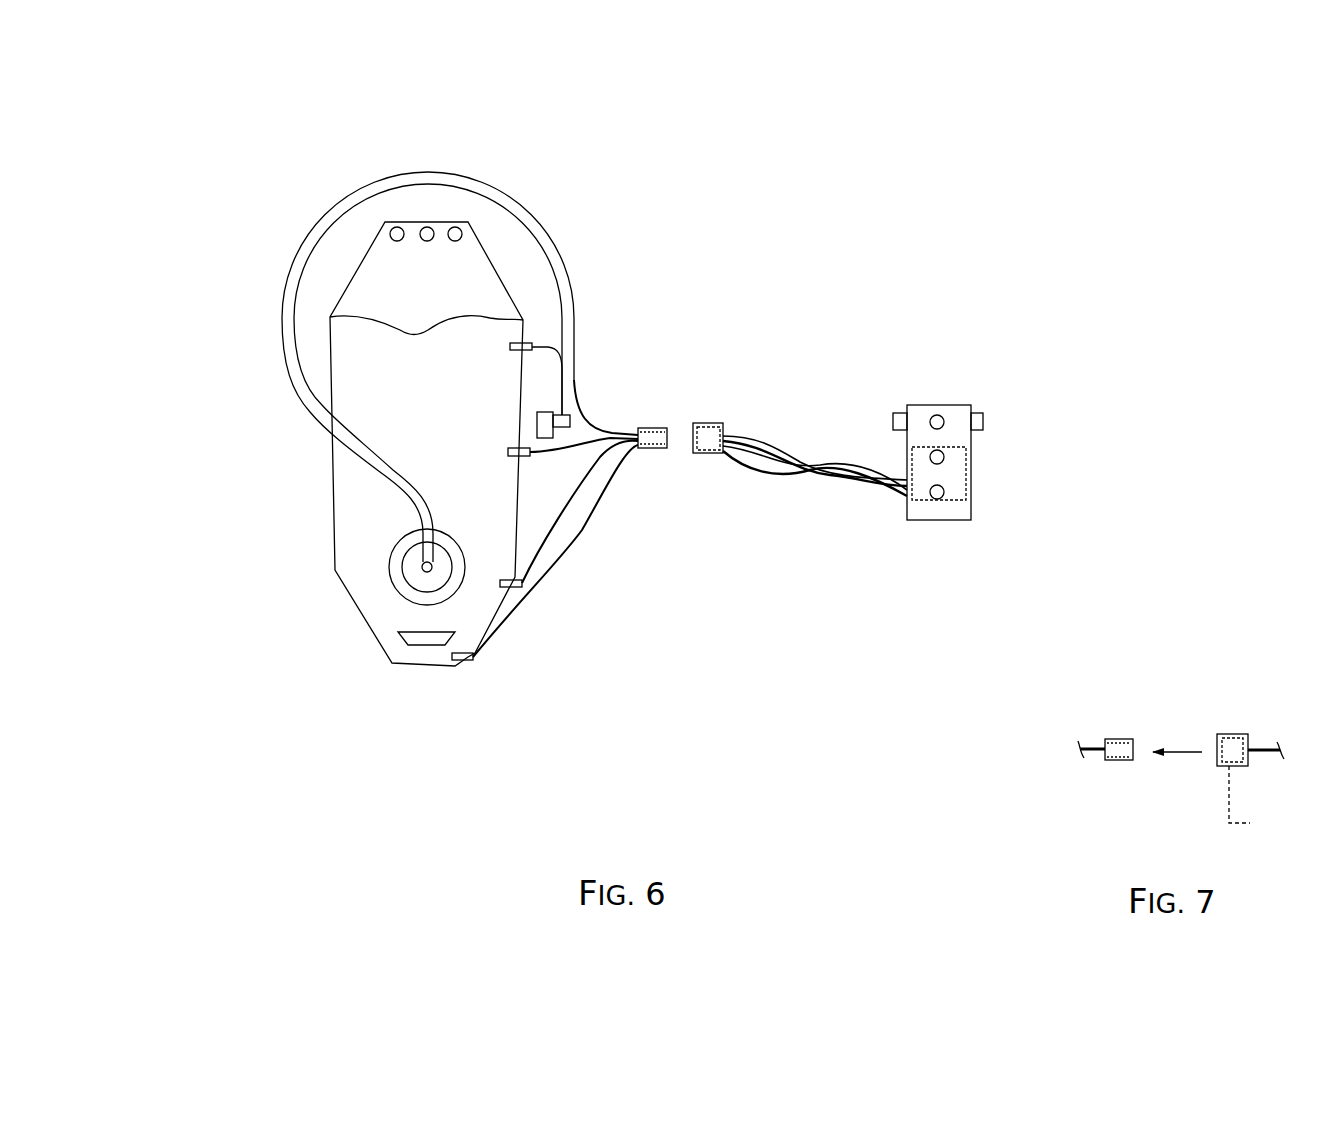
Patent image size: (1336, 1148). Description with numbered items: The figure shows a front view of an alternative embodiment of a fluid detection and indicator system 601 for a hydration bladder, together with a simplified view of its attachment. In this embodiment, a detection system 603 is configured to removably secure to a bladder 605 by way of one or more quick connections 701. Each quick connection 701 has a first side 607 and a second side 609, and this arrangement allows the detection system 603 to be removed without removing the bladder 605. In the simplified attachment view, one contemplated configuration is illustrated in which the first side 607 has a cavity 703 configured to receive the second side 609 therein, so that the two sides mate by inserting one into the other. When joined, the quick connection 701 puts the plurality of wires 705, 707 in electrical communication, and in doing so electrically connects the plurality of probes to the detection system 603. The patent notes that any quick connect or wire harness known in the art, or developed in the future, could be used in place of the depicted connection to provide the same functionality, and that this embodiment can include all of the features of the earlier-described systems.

In FIG. 6, the fluid detection and indicator system 601 is at (170, 138).
In FIG. 6, the detection system 603 is at (917, 300).
In FIG. 6, the bladder 605 is at (600, 182).
In FIG. 6, the first side 607 is at (710, 423).
In FIG. 7, the first side 607 is at (1228, 734).
In FIG. 6, the second side 609 is at (653, 448).
In FIG. 7, the second side 609 is at (1120, 760).
In FIG. 6, the quick connection 701 is at (629, 483).
In FIG. 7, the quick connection 701 is at (1178, 706).
In FIG. 7, the cavity 703 is at (1263, 805).
In FIG. 7, the wire 705 is at (1097, 743).
In FIG. 7, the wire 707 is at (1263, 755).